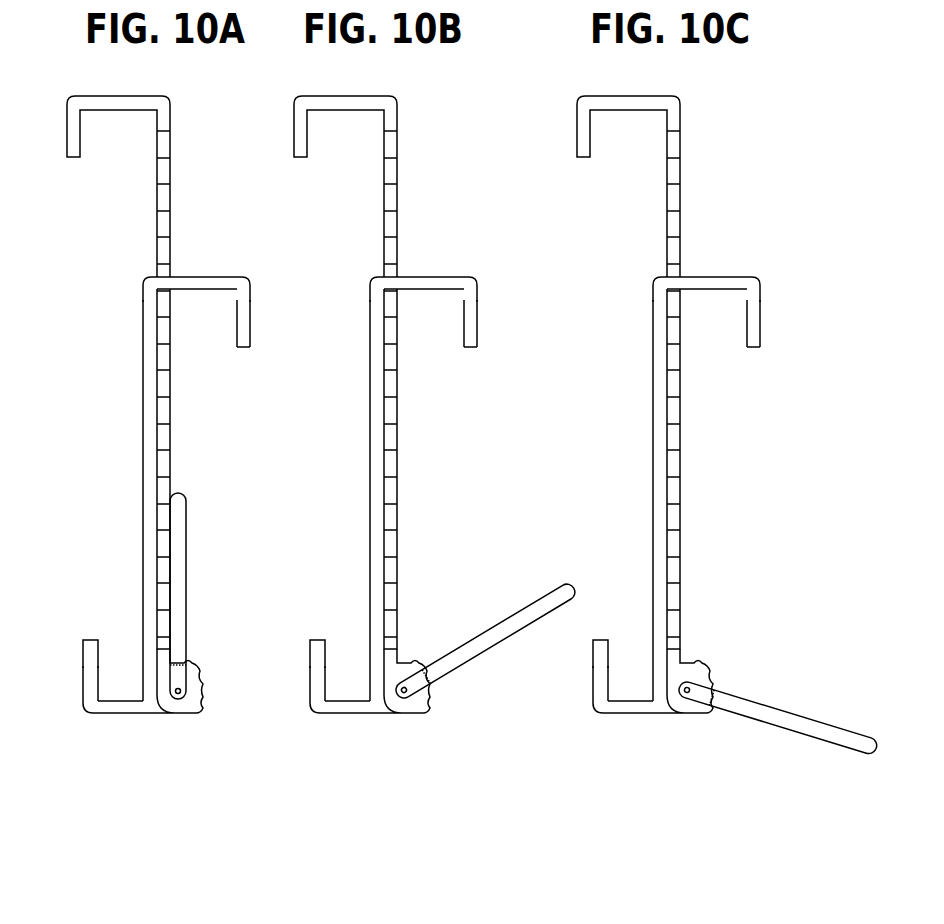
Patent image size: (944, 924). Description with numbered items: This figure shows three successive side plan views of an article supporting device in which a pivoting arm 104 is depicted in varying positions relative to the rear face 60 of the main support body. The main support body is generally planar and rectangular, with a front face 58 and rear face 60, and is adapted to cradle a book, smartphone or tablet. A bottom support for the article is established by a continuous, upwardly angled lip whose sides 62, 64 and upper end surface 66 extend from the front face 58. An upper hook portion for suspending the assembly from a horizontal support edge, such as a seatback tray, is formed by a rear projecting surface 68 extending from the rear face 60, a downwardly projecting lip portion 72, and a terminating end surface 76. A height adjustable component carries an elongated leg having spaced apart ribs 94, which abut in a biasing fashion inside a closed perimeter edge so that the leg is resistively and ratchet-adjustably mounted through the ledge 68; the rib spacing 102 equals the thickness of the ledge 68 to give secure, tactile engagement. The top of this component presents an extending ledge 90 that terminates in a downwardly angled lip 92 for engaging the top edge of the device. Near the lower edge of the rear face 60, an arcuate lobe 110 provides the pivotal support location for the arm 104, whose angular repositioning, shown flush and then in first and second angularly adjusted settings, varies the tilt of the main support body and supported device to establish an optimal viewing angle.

In FIG. 10A, the front face 58 is at (143, 480).
In FIG. 10B, the front face 58 is at (351, 500).
In FIG. 10C, the front face 58 is at (634, 500).
In FIG. 10A, the rear face 60 is at (157, 408).
In FIG. 10B, the rear face 60 is at (418, 469).
In FIG. 10C, the rear face 60 is at (702, 469).
In FIG. 10A, the side of upwardly angled lip 62 is at (123, 715).
In FIG. 10B, the side of upwardly angled lip 62 is at (371, 713).
In FIG. 10C, the side of upwardly angled lip 62 is at (654, 713).
In FIG. 10A, the side of upwardly angled lip 64 is at (83, 688).
In FIG. 10B, the side of upwardly angled lip 64 is at (295, 673).
In FIG. 10C, the side of upwardly angled lip 64 is at (578, 673).
In FIG. 10A, the upper end surface of lip 66 is at (90, 640).
In FIG. 10B, the upper end surface of lip 66 is at (312, 618).
In FIG. 10C, the upper end surface of lip 66 is at (595, 618).
In FIG. 10A, the rear projecting surface 68 is at (205, 277).
In FIG. 10B, the rear projecting surface 68 is at (430, 266).
In FIG. 10C, the rear projecting surface 68 is at (713, 266).
In FIG. 10A, the downwardly projecting lip portion 72 is at (245, 328).
In FIG. 10B, the downwardly projecting lip portion 72 is at (494, 312).
In FIG. 10C, the downwardly projecting lip portion 72 is at (777, 312).
In FIG. 10A, the terminating end surface 76 is at (243, 349).
In FIG. 10B, the terminating end surface 76 is at (463, 380).
In FIG. 10C, the terminating end surface 76 is at (746, 380).
In FIG. 10A, the extending ledge 90 is at (116, 97).
In FIG. 10B, the extending ledge 90 is at (346, 89).
In FIG. 10C, the extending ledge 90 is at (629, 89).
In FIG. 10A, the downwardly angled lip 92 is at (66, 147).
In FIG. 10B, the downwardly angled lip 92 is at (277, 126).
In FIG. 10C, the downwardly angled lip 92 is at (560, 126).
In FIG. 10A, the ribs 94 is at (157, 217).
In FIG. 10B, the ribs 94 is at (356, 211).
In FIG. 10C, the ribs 94 is at (639, 211).
In FIG. 10A, the rib spacing 102 is at (165, 176).
In FIG. 10B, the rib spacing 102 is at (416, 199).
In FIG. 10C, the rib spacing 102 is at (649, 199).
In FIG. 10A, the arm 104 is at (186, 606).
In FIG. 10B, the arm 104 is at (485, 646).
In FIG. 10C, the arm 104 is at (778, 727).
In FIG. 10A, the arcuate lobe 110 is at (178, 714).
In FIG. 10B, the arcuate lobe 110 is at (429, 705).
In FIG. 10C, the arcuate lobe 110 is at (722, 669).